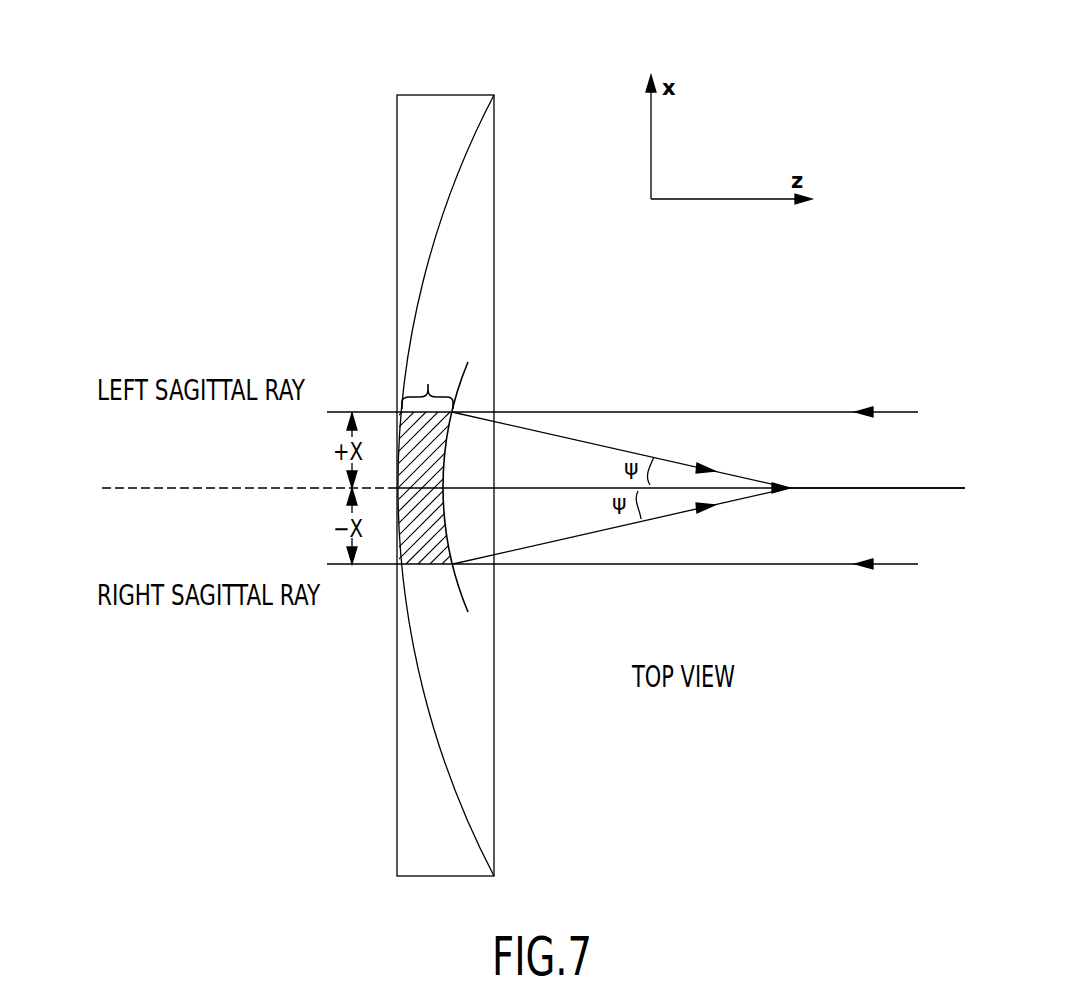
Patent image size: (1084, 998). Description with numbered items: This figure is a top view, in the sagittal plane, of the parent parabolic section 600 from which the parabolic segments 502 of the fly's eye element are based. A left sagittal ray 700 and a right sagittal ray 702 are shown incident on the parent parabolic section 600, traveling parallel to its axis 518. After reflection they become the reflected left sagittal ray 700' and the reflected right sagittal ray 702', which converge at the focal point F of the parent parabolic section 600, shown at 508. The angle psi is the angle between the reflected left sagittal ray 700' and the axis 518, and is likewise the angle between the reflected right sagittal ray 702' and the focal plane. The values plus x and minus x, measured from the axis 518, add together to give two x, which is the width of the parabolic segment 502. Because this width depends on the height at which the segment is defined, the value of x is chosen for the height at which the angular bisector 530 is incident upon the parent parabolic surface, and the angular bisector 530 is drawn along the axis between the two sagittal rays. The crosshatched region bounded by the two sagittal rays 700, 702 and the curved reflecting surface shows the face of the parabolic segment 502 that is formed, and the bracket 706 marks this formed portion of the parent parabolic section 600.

The parent parabolic section 600 is at (440, 95).
The central portion of lens 706 is at (428, 384).
The parabolic segment 502 is at (447, 452).
The angular bisector 530 is at (538, 488).
The left sagittal ray 700 is at (622, 366).
The right sagittal ray 702 is at (622, 604).
The reflected left sagittal ray 700' is at (620, 420).
The reflected right sagittal ray 702' is at (621, 555).
The focal point 508 is at (798, 477).
The axis 518 is at (838, 490).